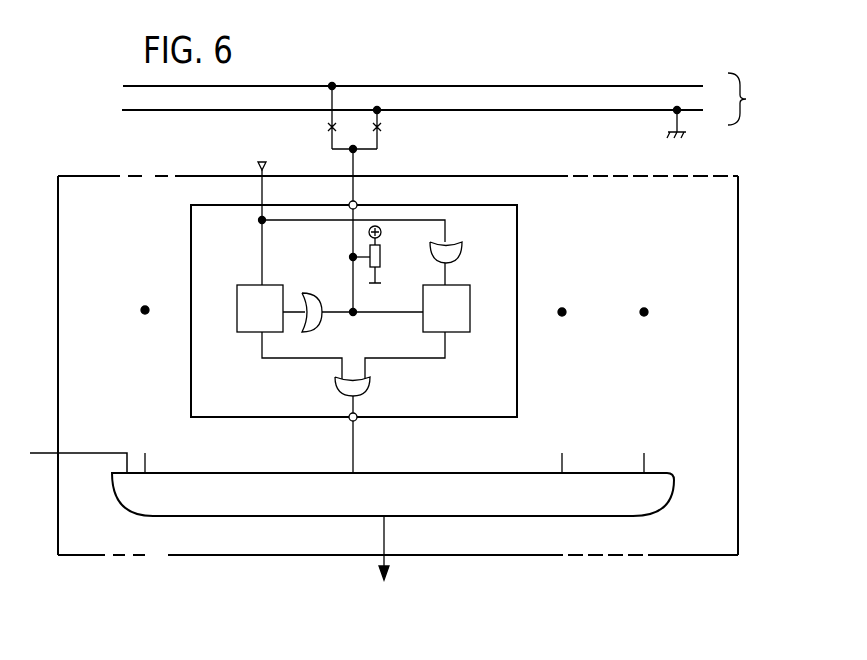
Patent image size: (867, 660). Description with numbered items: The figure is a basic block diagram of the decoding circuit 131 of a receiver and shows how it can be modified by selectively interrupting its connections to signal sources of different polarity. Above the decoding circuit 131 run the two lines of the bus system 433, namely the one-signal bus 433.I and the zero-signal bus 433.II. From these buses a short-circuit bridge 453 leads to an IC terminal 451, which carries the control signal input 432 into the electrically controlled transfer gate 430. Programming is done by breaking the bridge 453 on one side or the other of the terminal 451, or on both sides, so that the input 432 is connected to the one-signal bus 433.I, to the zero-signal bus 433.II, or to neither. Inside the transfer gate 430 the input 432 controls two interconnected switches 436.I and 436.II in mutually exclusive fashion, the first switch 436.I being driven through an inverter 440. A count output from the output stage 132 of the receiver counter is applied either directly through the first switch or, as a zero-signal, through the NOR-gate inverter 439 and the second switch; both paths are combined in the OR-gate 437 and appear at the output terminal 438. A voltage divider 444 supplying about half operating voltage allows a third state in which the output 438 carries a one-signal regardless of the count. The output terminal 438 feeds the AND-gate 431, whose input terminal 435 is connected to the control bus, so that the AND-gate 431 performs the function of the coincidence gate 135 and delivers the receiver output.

The decoding circuit 131 is at (82, 191).
The output stage 132 is at (262, 211).
The coincidence gate 135 is at (384, 564).
The transfer gate 430 is at (195, 218).
The AND-gate 431 is at (152, 500).
The control signal input 432 is at (360, 203).
The bus system 433 is at (452, 105).
The 1-signal bus 433.I is at (545, 86).
The 0-signal bus 433.II is at (550, 110).
The input terminal 435 is at (115, 488).
The first switch 436.I is at (242, 292).
The second switch 436.II is at (480, 280).
The OR-gate 437 is at (372, 382).
The output terminal 438 is at (358, 421).
The inverter 439 is at (456, 248).
The inverter 440 is at (318, 292).
The voltage divider 444 is at (383, 257).
The IC terminal 451 is at (360, 153).
The short-circuit bridge 453 is at (340, 150).